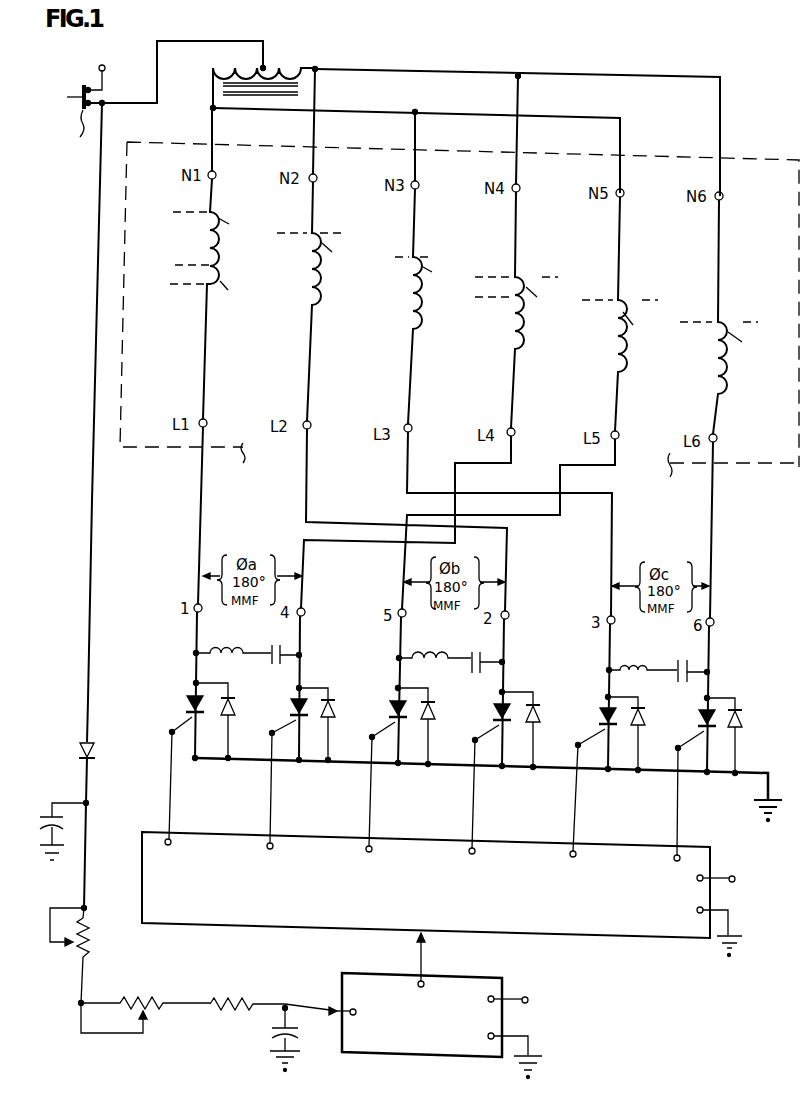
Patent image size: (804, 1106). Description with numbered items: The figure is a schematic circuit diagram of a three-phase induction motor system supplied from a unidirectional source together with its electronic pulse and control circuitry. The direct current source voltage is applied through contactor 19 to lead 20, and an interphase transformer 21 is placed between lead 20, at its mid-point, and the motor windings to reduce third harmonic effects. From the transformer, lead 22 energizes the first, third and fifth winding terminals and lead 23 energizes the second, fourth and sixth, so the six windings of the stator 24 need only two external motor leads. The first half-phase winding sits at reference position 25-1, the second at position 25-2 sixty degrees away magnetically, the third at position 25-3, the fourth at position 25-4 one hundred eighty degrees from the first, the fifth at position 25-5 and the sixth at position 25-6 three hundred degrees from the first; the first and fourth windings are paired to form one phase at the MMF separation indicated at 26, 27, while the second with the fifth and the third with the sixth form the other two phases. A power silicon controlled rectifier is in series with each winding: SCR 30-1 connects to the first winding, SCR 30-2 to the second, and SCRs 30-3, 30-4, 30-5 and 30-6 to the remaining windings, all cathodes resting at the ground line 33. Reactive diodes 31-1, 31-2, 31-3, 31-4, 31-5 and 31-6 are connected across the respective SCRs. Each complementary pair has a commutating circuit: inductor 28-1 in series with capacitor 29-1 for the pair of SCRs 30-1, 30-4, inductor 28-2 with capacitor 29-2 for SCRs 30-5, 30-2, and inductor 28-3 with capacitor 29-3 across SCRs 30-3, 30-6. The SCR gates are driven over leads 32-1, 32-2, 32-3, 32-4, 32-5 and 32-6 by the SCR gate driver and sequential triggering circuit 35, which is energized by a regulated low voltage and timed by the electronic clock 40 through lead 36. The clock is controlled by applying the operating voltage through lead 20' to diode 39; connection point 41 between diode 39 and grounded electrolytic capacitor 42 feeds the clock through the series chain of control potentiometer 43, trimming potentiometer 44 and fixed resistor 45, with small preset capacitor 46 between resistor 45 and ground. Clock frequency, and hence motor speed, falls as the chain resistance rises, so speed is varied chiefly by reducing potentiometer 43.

The contactor 19 is at (82, 138).
The lead 20 is at (175, 73).
The lead 20' is at (75, 422).
The interphase transformer 21 is at (291, 69).
The lead 22 is at (355, 113).
The lead 23 is at (599, 78).
The stator 24 is at (141, 456).
The reference position 25-1 is at (243, 204).
The position 25-2 is at (322, 234).
The reference start position 25-3 is at (425, 256).
The position 25-4 is at (519, 277).
The position 25-5 is at (625, 300).
The position 25-6 is at (722, 324).
The MMF separation indication 26 is at (163, 273).
The MMF separation indication 27 is at (474, 283).
The commutating inductor 28-1 is at (226, 643).
The commutating inductor 28-2 is at (428, 654).
The commutating inductor 28-3 is at (631, 664).
The commutating capacitor 29-1 is at (273, 648).
The commutating capacitor 29-2 is at (472, 658).
The commutating capacitor 29-3 is at (679, 669).
The SCR 30-1 is at (185, 709).
The SCR 30-2 is at (493, 710).
The SCR 30-3 is at (600, 714).
The SCR 30-4 is at (290, 711).
The SCR 30-5 is at (391, 709).
The SCR 30-6 is at (697, 718).
The reactive diode 31-1 is at (235, 697).
The reactive diode 31-2 is at (541, 692).
The reactive diode 31-3 is at (645, 695).
The reactive diode 31-4 is at (333, 700).
The reactive diode 31-5 is at (433, 702).
The reactive diode 31-6 is at (748, 695).
The lead 32-1 is at (170, 819).
The lead 32-2 is at (474, 831).
The lead 32-3 is at (576, 833).
The lead 32-4 is at (273, 822).
The lead 32-5 is at (372, 823).
The lead 32-6 is at (679, 834).
The ground line 33 is at (750, 771).
The SCR gate driver and sequential triggering circuit 35 is at (655, 940).
The lead 36 is at (422, 960).
The diode 39 is at (78, 748).
The electronic clock 40 is at (488, 977).
The connection point 41 is at (91, 804).
The electrolytic capacitor 42 is at (36, 829).
The control potentiometer 43 is at (125, 955).
The potentiometer 44 is at (143, 1000).
The resistor 45 is at (235, 1000).
The capacitor 46 is at (270, 1036).